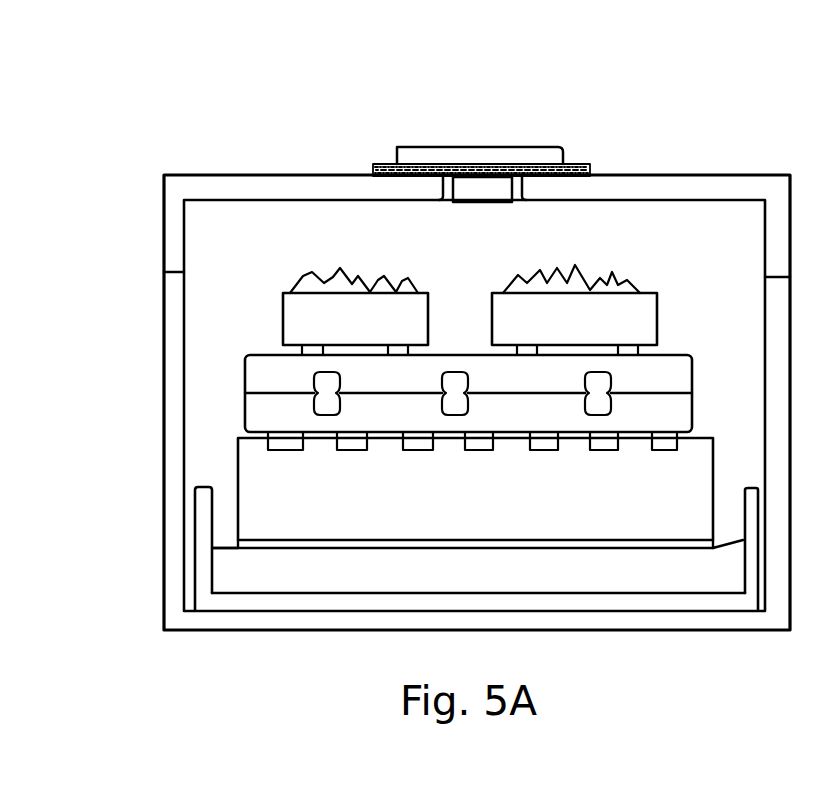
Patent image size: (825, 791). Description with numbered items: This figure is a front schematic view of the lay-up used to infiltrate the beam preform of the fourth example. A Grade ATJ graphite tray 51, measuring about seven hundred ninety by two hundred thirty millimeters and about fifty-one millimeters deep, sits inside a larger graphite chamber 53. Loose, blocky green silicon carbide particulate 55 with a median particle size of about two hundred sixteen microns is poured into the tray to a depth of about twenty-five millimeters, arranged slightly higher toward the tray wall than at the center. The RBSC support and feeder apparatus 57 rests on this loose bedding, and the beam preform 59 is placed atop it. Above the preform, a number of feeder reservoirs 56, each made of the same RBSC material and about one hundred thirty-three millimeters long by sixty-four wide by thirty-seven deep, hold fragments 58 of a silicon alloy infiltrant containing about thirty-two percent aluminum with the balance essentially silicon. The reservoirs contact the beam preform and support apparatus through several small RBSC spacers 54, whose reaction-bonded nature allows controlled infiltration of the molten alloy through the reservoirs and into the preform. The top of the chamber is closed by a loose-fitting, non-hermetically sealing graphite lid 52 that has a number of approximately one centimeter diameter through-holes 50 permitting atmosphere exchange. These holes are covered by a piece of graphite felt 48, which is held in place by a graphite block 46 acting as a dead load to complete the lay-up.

The graphite block 46 is at (418, 152).
The graphite felt 48 is at (577, 168).
The through-holes 50 is at (448, 202).
The graphite tray 51 is at (208, 503).
The graphite lid 52 is at (172, 240).
The graphite chamber 53 is at (183, 612).
The RBSC spacers 54 is at (628, 354).
The silicon carbide particulate 55 is at (228, 563).
The feeder reservoirs 56 is at (303, 320).
The RBSC support and feeder apparatus 57 is at (250, 467).
The fragments 58 is at (333, 285).
The beam preform 59 is at (263, 375).